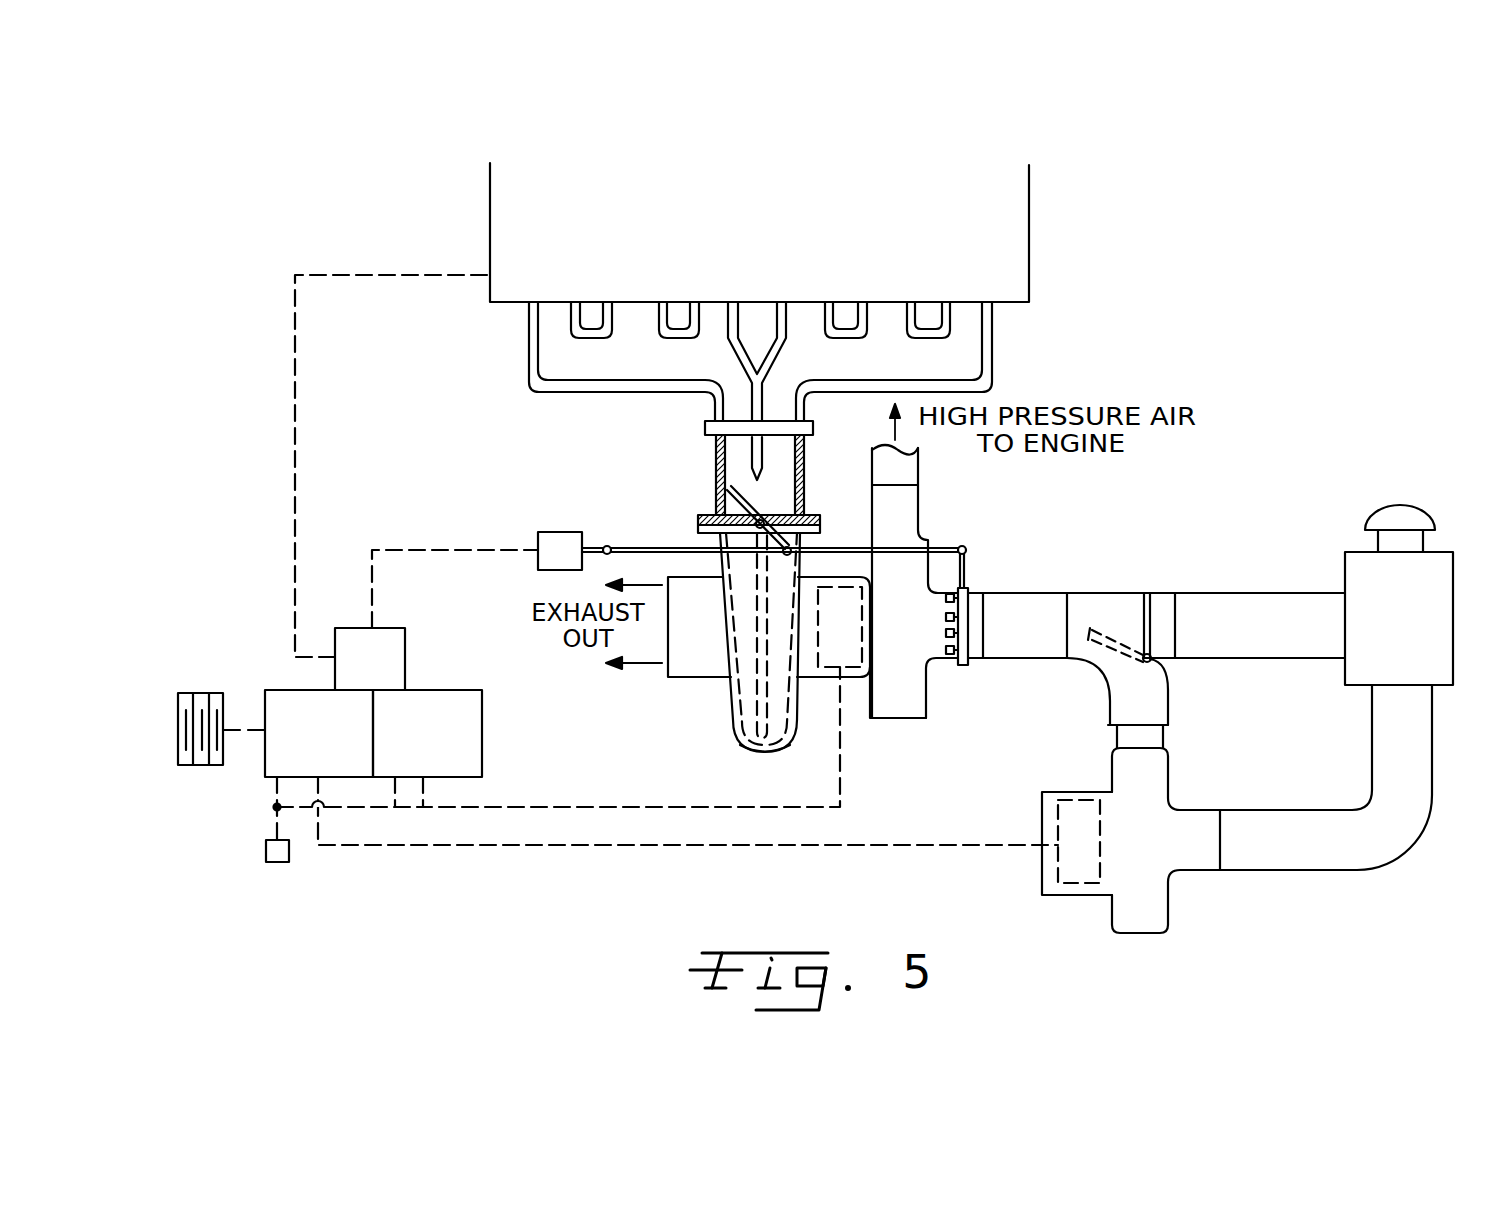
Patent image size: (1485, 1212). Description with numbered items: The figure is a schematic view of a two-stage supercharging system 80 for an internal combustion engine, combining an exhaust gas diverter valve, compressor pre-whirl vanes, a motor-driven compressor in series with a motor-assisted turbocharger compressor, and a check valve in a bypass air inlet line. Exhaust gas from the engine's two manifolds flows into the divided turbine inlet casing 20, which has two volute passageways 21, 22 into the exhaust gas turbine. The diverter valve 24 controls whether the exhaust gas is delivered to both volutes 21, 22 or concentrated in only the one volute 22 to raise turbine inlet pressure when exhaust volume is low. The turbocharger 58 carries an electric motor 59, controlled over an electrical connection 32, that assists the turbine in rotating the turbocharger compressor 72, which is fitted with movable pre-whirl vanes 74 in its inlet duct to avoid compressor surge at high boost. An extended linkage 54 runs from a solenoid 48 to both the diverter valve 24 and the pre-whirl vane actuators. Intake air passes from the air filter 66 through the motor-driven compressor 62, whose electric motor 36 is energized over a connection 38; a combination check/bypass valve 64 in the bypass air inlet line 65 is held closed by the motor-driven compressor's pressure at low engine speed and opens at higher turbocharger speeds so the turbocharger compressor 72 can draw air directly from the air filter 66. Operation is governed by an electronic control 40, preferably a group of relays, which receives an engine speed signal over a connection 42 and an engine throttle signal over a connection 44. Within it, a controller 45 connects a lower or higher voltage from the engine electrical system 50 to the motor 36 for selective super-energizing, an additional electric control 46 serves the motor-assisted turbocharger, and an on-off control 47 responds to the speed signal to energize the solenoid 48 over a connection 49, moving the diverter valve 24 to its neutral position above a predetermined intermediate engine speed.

The divided turbine inlet casing 20 is at (772, 753).
The volute passageway 21 is at (748, 712).
The volute passageway 22 is at (782, 722).
The diverter valve 24 is at (735, 487).
The electrical connection 32 is at (508, 807).
The electric motor 36 is at (1057, 860).
The connection 38 is at (975, 845).
The electronic control 40 is at (373, 683).
The engine speed signal connection 42 is at (295, 372).
The engine throttle signal connection 44 is at (385, 808).
The controller 45 is at (319, 733).
The electric control 46 is at (427, 733).
The on-off control 47 is at (370, 659).
The solenoid 48 is at (560, 532).
The connection 49 is at (412, 550).
The engine electrical system 50 is at (200, 693).
The extended linkage 54 is at (948, 548).
The turbocharger 58 is at (732, 746).
The electric motor 59 is at (838, 587).
The motor-driven compressor 62 is at (1168, 780).
The combination check/bypass valve 64 is at (1144, 612).
The bypass air inlet line 65 is at (1232, 593).
The air filter 66 is at (1345, 568).
The turbocharger compressor 72 is at (912, 720).
The pre-whirl vanes 74 is at (948, 664).
The supercharging system 80 is at (1250, 495).